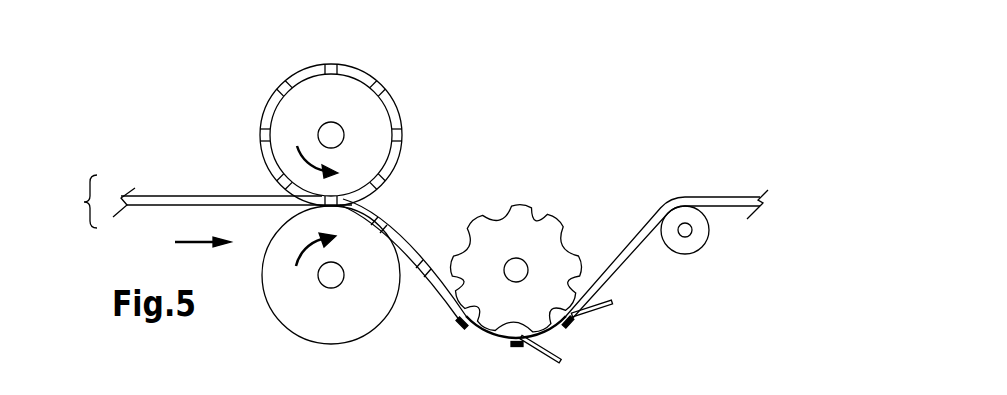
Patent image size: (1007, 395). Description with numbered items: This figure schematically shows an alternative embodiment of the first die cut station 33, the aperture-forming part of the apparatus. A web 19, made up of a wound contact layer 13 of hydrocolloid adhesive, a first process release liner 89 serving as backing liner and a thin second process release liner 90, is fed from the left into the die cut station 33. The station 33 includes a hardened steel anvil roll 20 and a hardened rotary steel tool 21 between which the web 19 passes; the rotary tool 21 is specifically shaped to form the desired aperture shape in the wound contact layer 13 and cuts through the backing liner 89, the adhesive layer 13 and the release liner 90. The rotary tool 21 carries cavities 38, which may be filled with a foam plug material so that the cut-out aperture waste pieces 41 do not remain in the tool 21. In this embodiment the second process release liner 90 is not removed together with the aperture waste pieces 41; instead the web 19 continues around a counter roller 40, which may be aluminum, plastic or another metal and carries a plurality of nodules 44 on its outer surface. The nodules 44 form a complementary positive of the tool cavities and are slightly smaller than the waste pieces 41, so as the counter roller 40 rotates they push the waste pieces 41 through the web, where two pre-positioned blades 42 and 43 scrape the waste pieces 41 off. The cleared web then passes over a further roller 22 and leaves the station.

The wound contact layer 13 is at (439, 234).
The web 19 is at (73, 201).
The anvil roll 20 is at (289, 332).
The rotary tool 21 is at (349, 120).
The idler roller 22 is at (701, 232).
The first die cut station 33 is at (527, 101).
The cavities 38 is at (333, 63).
The counter roller 40 is at (516, 251).
The aperture waste pieces 41 is at (458, 328).
The pre-positioned blade 42 is at (540, 352).
The pre-positioned blade 43 is at (598, 310).
The nodules 44 is at (470, 221).
The first process release liner 89 is at (170, 208).
The second process release liner 90 is at (178, 196).